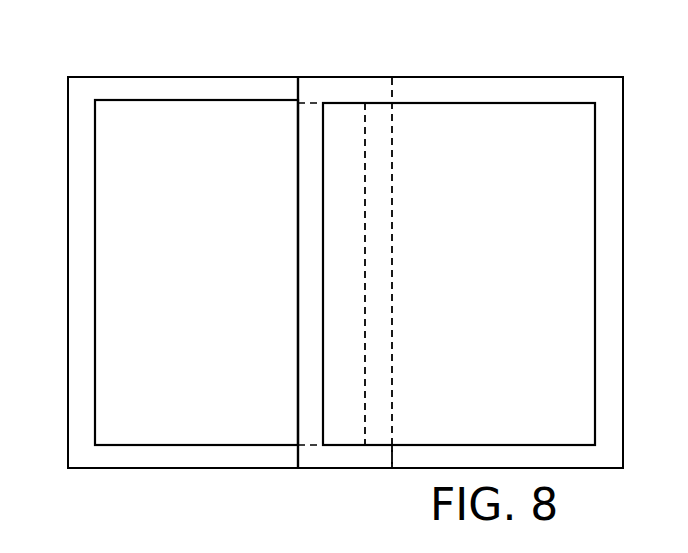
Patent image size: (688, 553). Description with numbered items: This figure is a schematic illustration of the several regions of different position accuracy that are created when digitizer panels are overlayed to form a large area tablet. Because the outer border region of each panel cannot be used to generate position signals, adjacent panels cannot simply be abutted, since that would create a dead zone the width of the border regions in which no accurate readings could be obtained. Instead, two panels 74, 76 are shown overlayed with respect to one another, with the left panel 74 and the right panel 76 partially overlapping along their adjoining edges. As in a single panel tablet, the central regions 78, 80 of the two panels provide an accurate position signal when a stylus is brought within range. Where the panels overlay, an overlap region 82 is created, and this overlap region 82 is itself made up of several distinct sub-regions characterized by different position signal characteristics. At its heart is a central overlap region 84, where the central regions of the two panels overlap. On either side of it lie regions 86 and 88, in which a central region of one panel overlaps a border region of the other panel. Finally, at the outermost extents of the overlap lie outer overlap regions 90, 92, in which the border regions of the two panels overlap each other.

The panel 74 is at (190, 74).
The panel 76 is at (490, 69).
The central region 78 is at (196, 272).
The central region 80 is at (459, 274).
The overlap region 82 is at (305, 475).
The central overlap region 84 is at (345, 368).
The region 86 is at (308, 314).
The region 88 is at (377, 337).
The outer overlap region 90 is at (323, 91).
The outer overlap region 92 is at (335, 458).